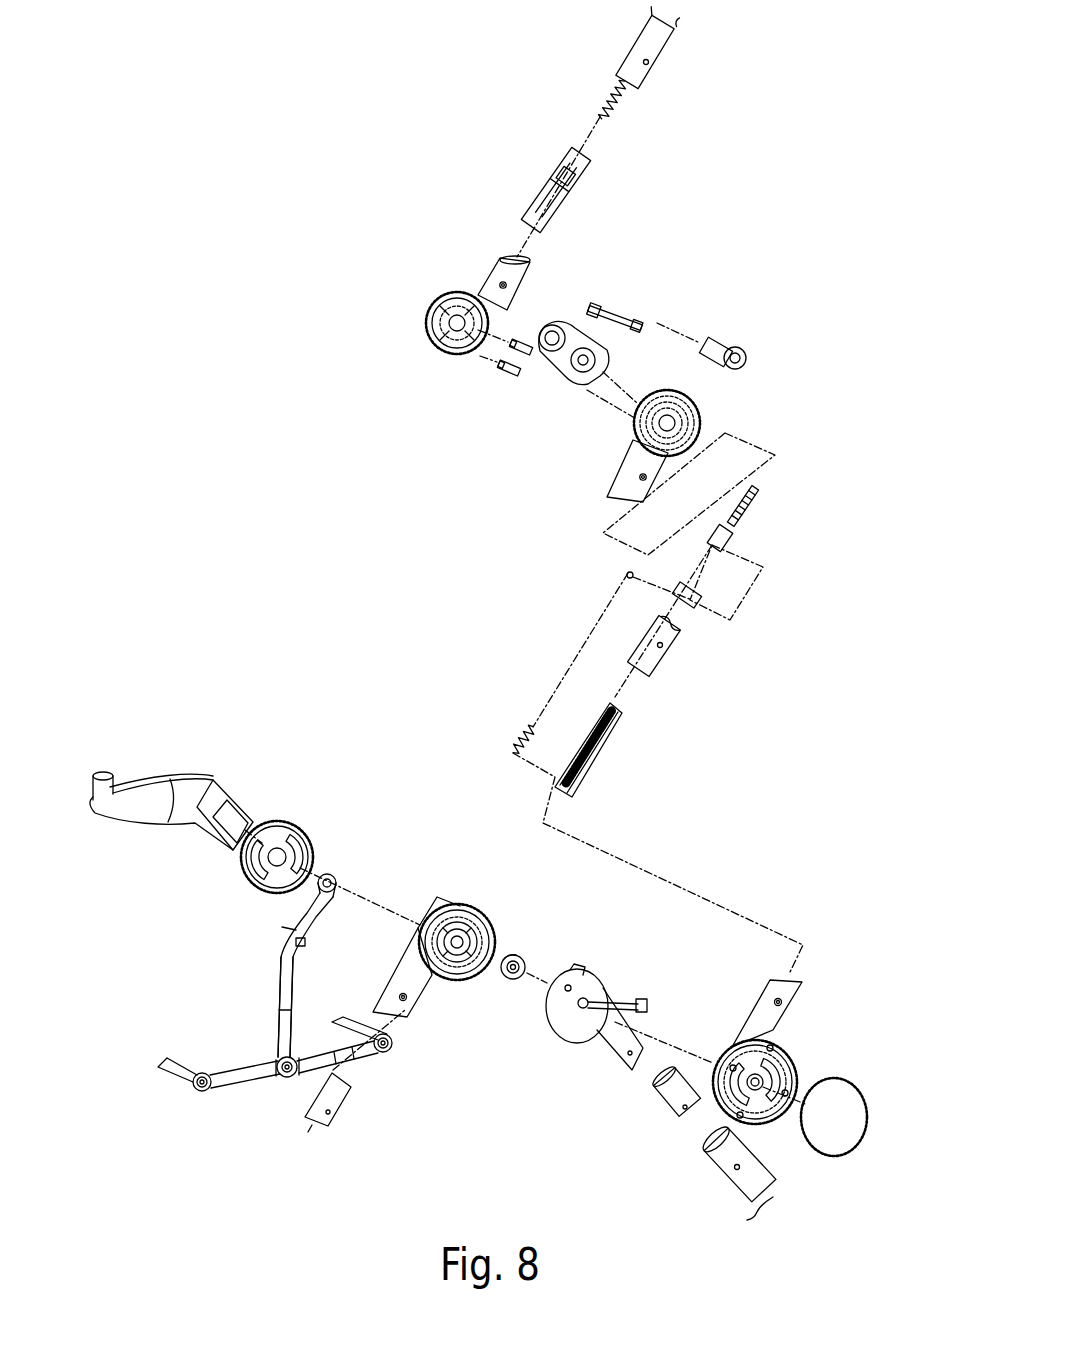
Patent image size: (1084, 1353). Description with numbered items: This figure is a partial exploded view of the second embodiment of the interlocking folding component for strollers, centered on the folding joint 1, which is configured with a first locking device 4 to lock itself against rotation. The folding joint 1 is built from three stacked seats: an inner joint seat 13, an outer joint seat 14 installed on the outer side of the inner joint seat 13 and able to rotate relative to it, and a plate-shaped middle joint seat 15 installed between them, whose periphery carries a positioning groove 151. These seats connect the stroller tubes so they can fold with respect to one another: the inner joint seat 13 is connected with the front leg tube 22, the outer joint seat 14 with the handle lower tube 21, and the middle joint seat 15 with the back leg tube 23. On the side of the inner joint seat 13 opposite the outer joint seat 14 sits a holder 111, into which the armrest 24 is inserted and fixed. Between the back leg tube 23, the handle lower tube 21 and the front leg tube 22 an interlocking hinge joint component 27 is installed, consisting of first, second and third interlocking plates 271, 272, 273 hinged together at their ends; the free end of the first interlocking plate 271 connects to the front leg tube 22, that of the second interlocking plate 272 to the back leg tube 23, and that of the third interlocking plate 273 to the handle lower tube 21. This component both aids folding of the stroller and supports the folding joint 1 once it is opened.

The folding joint 1 is at (697, 1035).
The first locking device 4 is at (610, 748).
The inner joint seat 13 is at (442, 977).
The outer joint seat 14 is at (790, 1050).
The middle joint seat 15 is at (563, 1020).
The positioning groove 151 is at (582, 973).
The handle lower tube 21 is at (667, 657).
The front leg tube 22 is at (333, 1097).
The back leg tube 23 is at (710, 1170).
The armrest 24 is at (193, 768).
The interlocking hinge joint component 27 is at (268, 926).
The holder 111 is at (273, 827).
The first interlocking plate 271 is at (248, 1080).
The second interlocking plate 272 is at (314, 1050).
The third interlocking plate 273 is at (280, 977).